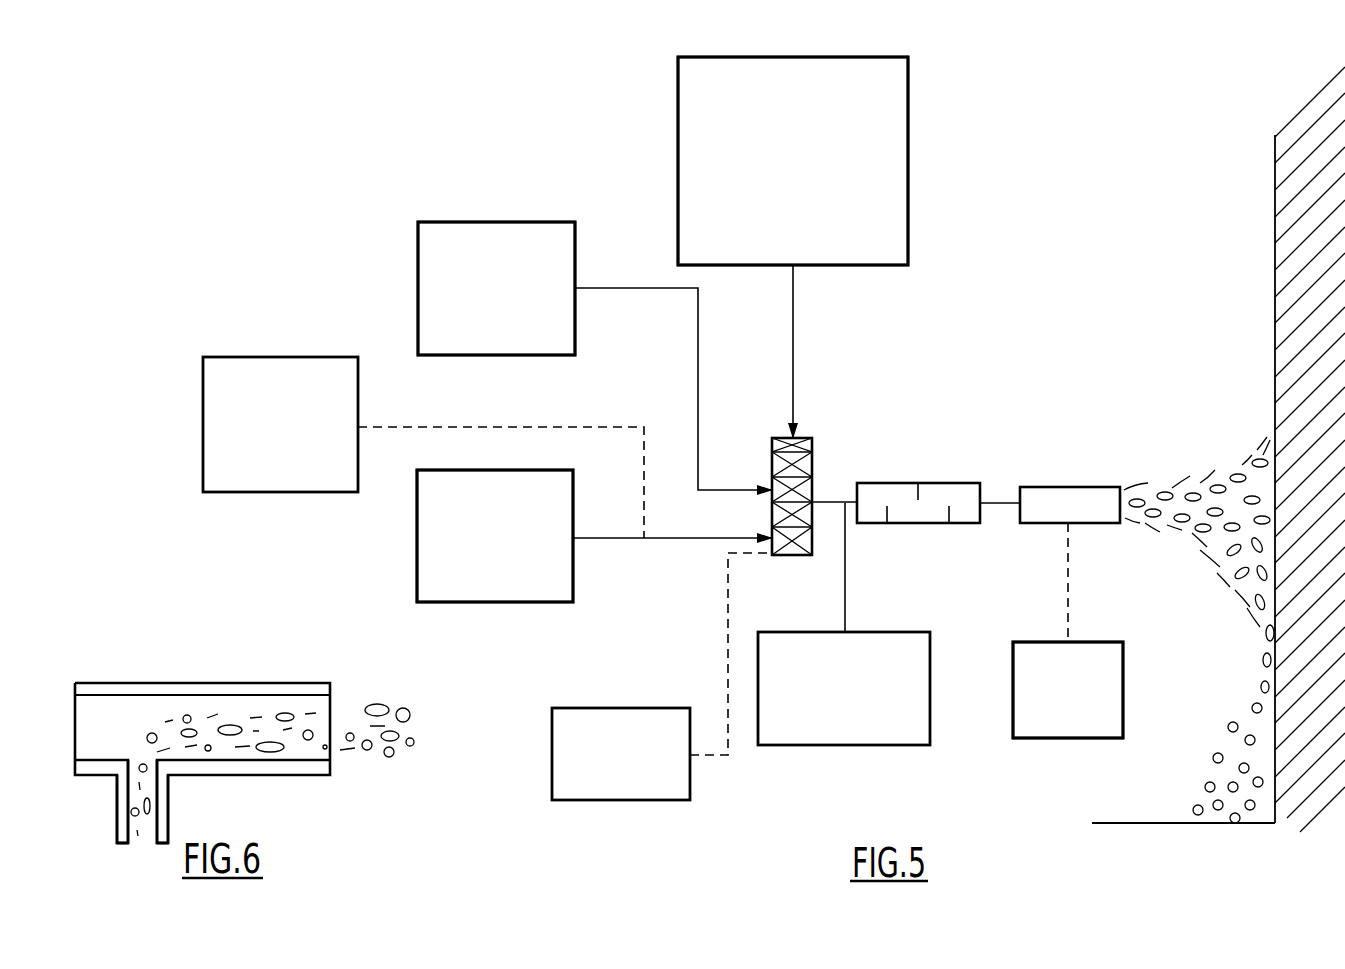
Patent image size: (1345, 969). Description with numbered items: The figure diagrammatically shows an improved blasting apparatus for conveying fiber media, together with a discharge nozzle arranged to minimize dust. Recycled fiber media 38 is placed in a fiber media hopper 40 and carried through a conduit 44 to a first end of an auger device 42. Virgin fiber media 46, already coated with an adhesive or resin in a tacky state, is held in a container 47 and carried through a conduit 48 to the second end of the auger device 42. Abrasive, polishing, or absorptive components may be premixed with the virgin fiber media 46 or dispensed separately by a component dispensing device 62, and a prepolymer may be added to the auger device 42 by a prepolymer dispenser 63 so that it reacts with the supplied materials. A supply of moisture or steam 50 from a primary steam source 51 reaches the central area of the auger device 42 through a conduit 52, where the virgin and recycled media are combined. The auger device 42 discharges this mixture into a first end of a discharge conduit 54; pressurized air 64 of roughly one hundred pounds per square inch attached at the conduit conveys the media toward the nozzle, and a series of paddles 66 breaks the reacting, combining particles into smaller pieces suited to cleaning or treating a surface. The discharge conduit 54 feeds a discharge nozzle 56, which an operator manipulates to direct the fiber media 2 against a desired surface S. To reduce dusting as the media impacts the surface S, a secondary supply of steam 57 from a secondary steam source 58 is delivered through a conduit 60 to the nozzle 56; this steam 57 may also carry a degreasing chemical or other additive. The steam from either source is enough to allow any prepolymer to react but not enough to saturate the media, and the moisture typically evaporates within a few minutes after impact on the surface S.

In FIG. 5, the spray of coated particles 2 is at (1250, 500).
In FIG. 5, the recycled fiber media 38 is at (780, 187).
In FIG. 5, the fiber media hopper 40 is at (908, 150).
In FIG. 5, the auger device 42 is at (814, 452).
In FIG. 5, the conduit 44 is at (793, 368).
In FIG. 5, the virgin fiber media 46 is at (447, 546).
In FIG. 5, the container 47 is at (532, 602).
In FIG. 5, the conduit 48 is at (698, 542).
In FIG. 5, the steam 50 is at (484, 282).
In FIG. 5, the primary steam source 51 is at (442, 222).
In FIG. 5, the conduit 52 is at (670, 286).
In FIG. 5, the discharge conduit 54 is at (1000, 505).
In FIG. 5, the discharge nozzle 56 is at (1087, 487).
In FIG. 6, the discharge nozzle 56 is at (190, 775).
In FIG. 5, the secondary steam 57 is at (1055, 688).
In FIG. 6, the secondary steam 57 is at (340, 712).
In FIG. 5, the secondary steam source 58 is at (1013, 668).
In FIG. 5, the conduit 60 is at (1068, 600).
In FIG. 6, the conduit 60 is at (117, 824).
In FIG. 5, the component dispensing device 62 is at (228, 357).
In FIG. 5, the prepolymer dispenser 63 is at (660, 708).
In FIG. 5, the compressed air supply 64 is at (815, 745).
In FIG. 5, the paddles 66 is at (898, 483).
In FIG. 5, the surface S is at (1275, 300).